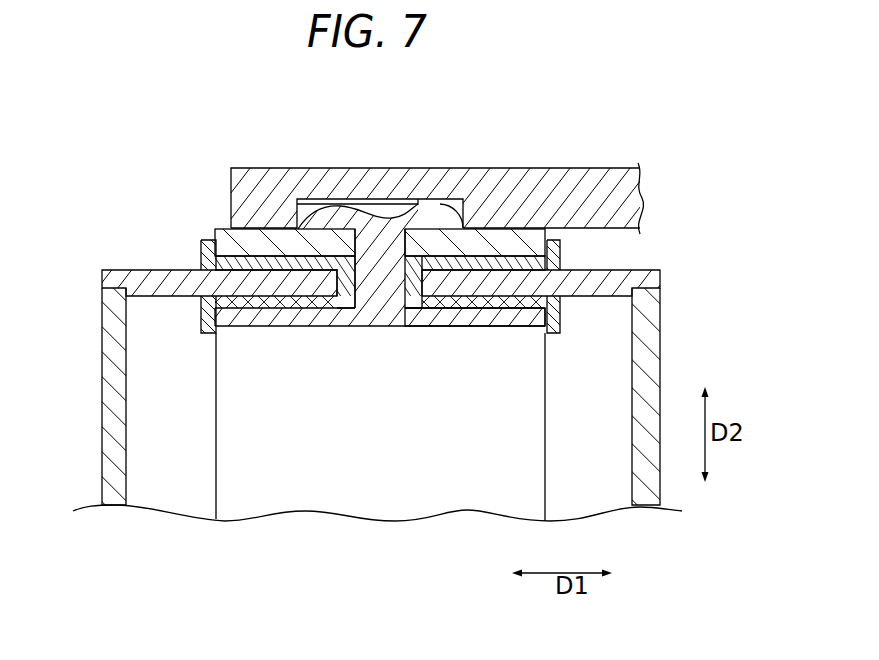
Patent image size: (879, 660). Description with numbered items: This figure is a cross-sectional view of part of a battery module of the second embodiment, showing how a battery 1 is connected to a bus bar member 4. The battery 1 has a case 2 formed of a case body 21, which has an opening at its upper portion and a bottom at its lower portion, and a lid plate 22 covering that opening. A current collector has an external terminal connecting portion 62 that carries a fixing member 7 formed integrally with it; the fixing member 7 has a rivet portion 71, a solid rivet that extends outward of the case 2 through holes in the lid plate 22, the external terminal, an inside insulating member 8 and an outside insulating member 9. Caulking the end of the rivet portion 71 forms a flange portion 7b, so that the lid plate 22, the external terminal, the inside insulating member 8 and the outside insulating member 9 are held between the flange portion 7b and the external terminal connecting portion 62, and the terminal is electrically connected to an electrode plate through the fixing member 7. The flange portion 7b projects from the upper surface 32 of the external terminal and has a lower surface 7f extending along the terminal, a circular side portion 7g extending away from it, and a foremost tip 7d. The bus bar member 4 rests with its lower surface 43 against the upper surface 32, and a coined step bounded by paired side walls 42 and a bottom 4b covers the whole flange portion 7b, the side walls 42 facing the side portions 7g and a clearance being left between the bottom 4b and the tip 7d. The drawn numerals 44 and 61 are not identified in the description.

The battery 1 is at (93, 246).
The case 2 is at (439, 335).
The case body 21 is at (655, 322).
The lid plate 22 is at (650, 282).
The bus bar member 4 is at (398, 191).
The bottom 4b is at (415, 203).
The side wall 42 is at (438, 199).
The lower surface 43 is at (480, 240).
The terminal plate portion 44 is at (512, 170).
The fixing member 7 is at (378, 342).
The rivet portion 71 is at (362, 200).
The lower surface 7f is at (303, 241).
The side portion 7g is at (318, 240).
The flange portion 7b is at (320, 212).
The tip 7d is at (357, 161).
The inside insulating member 8 is at (551, 333).
The outside insulating member 9 is at (557, 250).
The upper surface 32 is at (223, 227).
The electrode assembly 61 is at (304, 480).
The external terminal connecting portion 62 is at (482, 320).